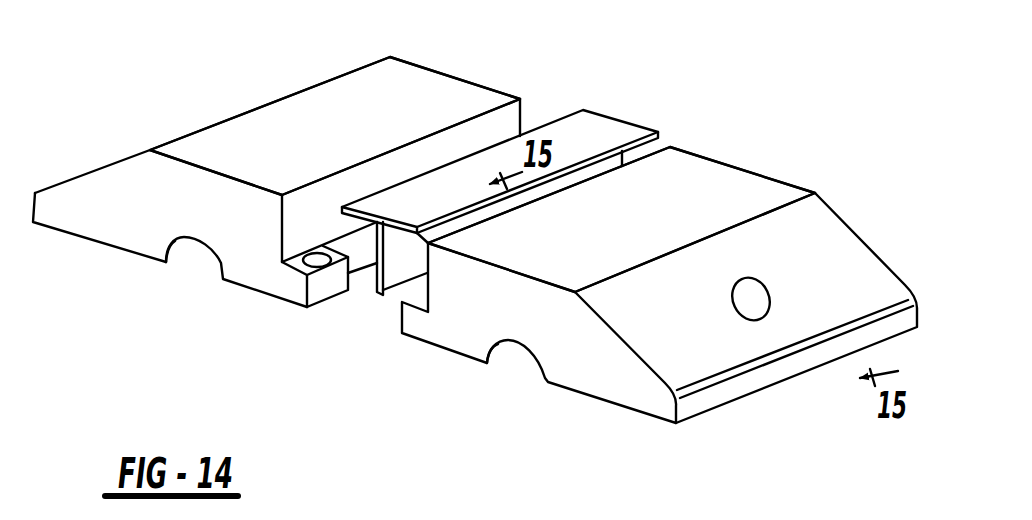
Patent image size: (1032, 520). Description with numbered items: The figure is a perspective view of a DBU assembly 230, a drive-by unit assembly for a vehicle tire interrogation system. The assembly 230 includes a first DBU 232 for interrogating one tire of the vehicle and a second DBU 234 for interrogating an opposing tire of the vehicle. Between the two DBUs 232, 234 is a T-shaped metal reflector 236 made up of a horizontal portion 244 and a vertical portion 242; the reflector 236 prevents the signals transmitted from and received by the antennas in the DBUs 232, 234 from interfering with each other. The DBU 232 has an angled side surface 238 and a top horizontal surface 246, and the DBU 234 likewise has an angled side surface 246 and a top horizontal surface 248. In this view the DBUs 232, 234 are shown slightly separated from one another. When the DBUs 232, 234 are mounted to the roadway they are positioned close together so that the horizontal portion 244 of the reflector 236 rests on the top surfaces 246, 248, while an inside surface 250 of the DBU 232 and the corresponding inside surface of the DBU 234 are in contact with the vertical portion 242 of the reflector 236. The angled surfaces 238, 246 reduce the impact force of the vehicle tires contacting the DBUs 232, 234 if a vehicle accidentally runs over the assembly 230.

The DBU assembly 230 is at (475, 213).
The first DBU 232 is at (276, 183).
The second DBU 234 is at (659, 256).
The T-shaped metal reflector 236 is at (547, 134).
The angled side surface 238 is at (113, 164).
The vertical portion 242 is at (397, 263).
The horizontal portion 244 is at (623, 132).
The top horizontal surface 246 is at (285, 122).
The top horizontal surface 248 is at (677, 178).
The inside surface 250 is at (302, 208).